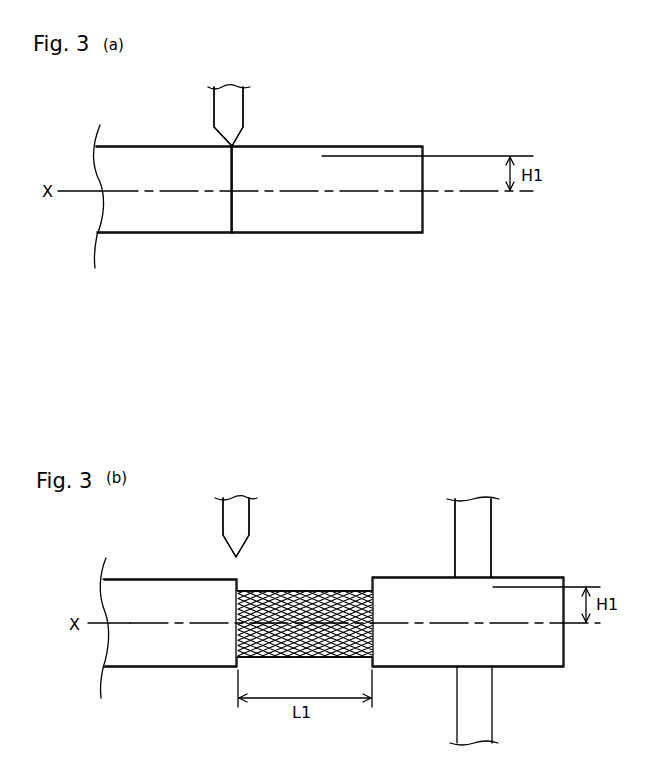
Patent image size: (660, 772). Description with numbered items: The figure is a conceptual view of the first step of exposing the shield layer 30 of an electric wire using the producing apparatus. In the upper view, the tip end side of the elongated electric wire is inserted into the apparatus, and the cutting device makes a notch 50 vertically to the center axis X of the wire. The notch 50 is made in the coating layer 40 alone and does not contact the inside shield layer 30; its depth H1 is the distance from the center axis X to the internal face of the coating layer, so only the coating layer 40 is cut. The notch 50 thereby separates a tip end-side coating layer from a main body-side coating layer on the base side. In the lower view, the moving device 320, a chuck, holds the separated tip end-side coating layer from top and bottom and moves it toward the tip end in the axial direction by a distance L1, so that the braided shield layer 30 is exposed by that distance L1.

The coating layer 40 is at (281, 276).
The notch 50 is at (232, 168).
The shield layer 30 is at (303, 607).
The moving device 320 is at (478, 540).